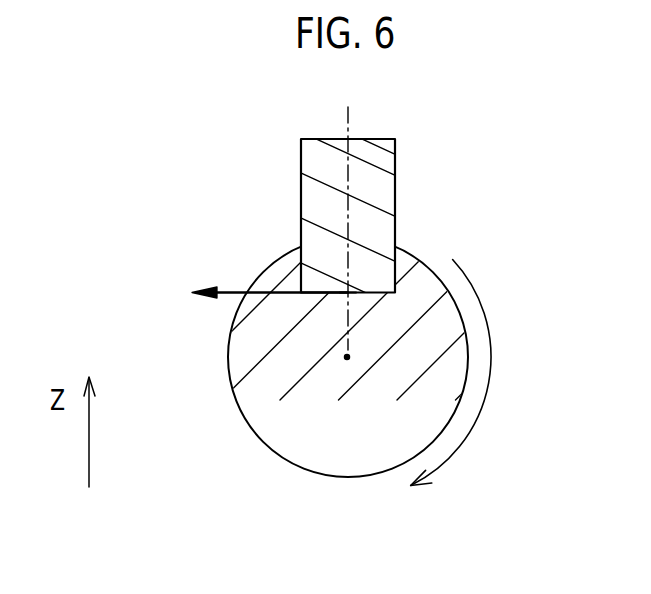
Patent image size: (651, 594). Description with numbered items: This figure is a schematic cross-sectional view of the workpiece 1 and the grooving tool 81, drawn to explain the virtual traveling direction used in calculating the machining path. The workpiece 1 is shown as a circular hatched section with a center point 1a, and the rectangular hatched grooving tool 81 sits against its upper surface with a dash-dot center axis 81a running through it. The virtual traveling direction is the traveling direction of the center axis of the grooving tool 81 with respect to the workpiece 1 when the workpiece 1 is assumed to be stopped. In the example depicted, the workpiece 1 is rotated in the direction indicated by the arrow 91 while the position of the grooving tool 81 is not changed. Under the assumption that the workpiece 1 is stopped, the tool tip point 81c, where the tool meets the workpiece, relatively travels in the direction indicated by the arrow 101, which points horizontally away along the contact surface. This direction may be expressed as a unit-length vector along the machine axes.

The workpiece 1 is at (260, 442).
The rotation center axis of workpiece 1a is at (348, 360).
The grooving tool 81 is at (395, 148).
The tool center axis 81a is at (347, 118).
The tool tip point 81c is at (347, 292).
The arrow 91 is at (491, 362).
The arrow 101 is at (230, 292).